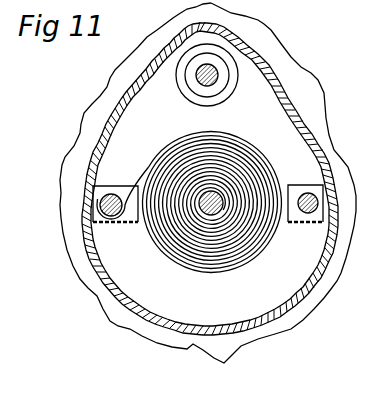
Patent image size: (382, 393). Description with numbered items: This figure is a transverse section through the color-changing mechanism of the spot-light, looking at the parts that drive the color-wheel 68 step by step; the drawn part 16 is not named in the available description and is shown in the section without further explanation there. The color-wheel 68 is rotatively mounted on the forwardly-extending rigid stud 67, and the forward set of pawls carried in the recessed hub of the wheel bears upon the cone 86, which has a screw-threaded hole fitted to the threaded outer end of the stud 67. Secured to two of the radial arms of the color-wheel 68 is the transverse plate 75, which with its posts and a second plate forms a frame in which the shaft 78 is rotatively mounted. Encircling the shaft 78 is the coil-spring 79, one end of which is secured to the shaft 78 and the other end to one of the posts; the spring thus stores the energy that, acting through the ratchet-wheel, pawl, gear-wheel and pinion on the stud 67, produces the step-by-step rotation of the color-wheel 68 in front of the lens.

The pin 16 is at (84, 219).
The stud 67 is at (212, 80).
The color-wheel 68 is at (177, 85).
The transverse plate 75 is at (132, 219).
The shaft 78 is at (214, 212).
The coil-spring 79 is at (248, 271).
The cone 86 is at (224, 71).